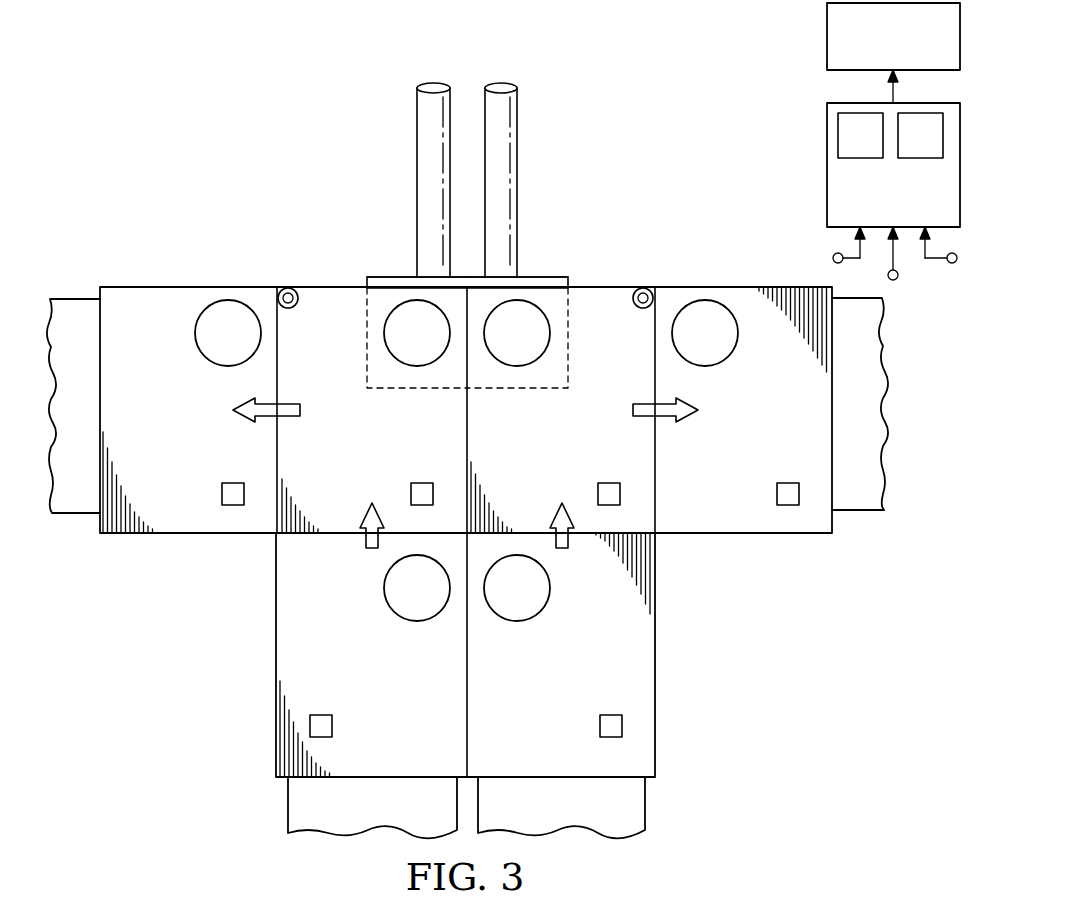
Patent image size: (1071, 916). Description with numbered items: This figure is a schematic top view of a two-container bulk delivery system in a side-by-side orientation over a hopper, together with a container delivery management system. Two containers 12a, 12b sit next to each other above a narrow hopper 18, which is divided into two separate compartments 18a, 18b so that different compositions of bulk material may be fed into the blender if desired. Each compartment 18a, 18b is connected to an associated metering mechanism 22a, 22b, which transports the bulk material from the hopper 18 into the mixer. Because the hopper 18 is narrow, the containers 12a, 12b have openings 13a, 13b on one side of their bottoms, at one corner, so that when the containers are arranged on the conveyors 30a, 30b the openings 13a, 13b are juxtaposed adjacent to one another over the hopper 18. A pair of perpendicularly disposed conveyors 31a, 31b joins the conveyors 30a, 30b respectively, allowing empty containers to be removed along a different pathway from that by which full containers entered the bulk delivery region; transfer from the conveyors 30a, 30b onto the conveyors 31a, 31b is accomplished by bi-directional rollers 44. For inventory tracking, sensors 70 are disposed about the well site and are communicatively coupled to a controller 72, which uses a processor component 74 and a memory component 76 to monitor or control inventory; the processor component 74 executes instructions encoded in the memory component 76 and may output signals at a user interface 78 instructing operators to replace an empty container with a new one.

The container 12a is at (282, 458).
The container 12b is at (648, 458).
The opening 13a is at (417, 366).
The opening 13b is at (517, 366).
The hopper 18 is at (606, 195).
The compartment 18a is at (396, 278).
The compartment 18b is at (538, 278).
The metering mechanism 22a is at (425, 153).
The metering mechanism 22b is at (508, 153).
The conveyor 30a is at (290, 805).
The conveyor 30b is at (640, 805).
The conveyor 31a is at (79, 512).
The conveyor 31b is at (857, 510).
The bi-directional roller 44 is at (288, 288).
The sensor 70 is at (222, 494).
The controller 72 is at (827, 163).
The processor component 74 is at (859, 158).
The memory component 76 is at (921, 158).
The user interface 78 is at (827, 35).